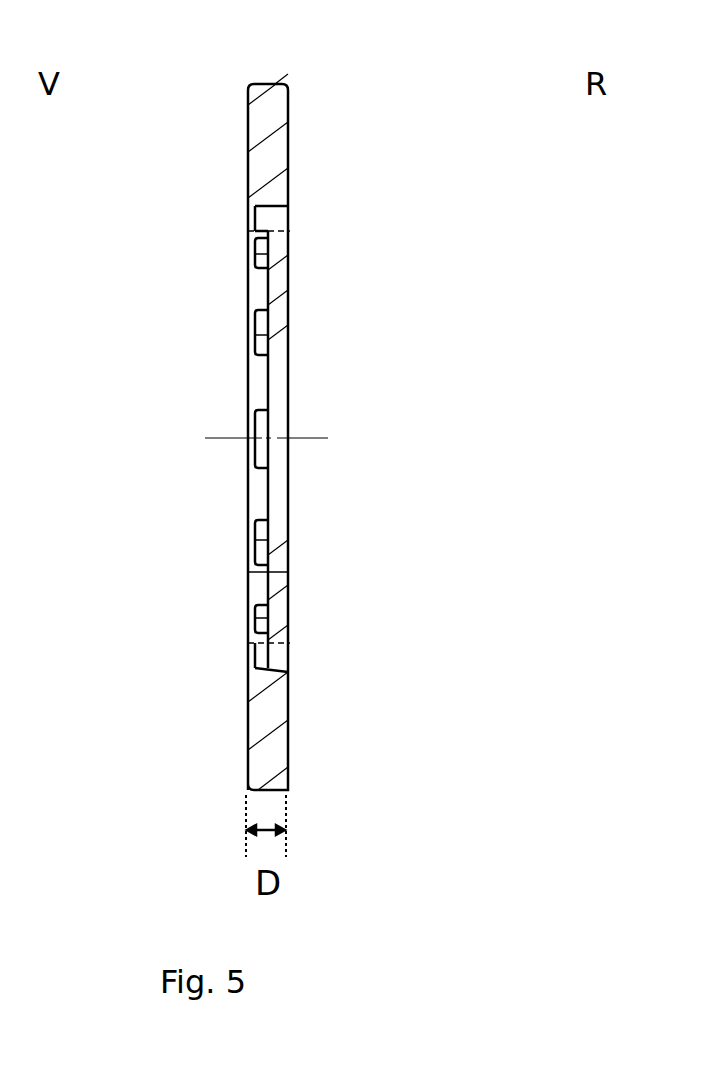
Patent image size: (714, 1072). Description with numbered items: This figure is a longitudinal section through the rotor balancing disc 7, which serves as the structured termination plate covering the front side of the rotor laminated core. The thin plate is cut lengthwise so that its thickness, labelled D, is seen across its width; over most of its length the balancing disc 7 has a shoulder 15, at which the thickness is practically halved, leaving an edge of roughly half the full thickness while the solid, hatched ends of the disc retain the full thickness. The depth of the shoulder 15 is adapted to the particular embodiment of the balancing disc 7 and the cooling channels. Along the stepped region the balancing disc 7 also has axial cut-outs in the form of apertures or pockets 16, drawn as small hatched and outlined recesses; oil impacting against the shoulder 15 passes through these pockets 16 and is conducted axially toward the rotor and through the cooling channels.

The balancing disc 7 is at (278, 166).
The shoulder 15 is at (255, 229).
The pockets 16 is at (278, 243).